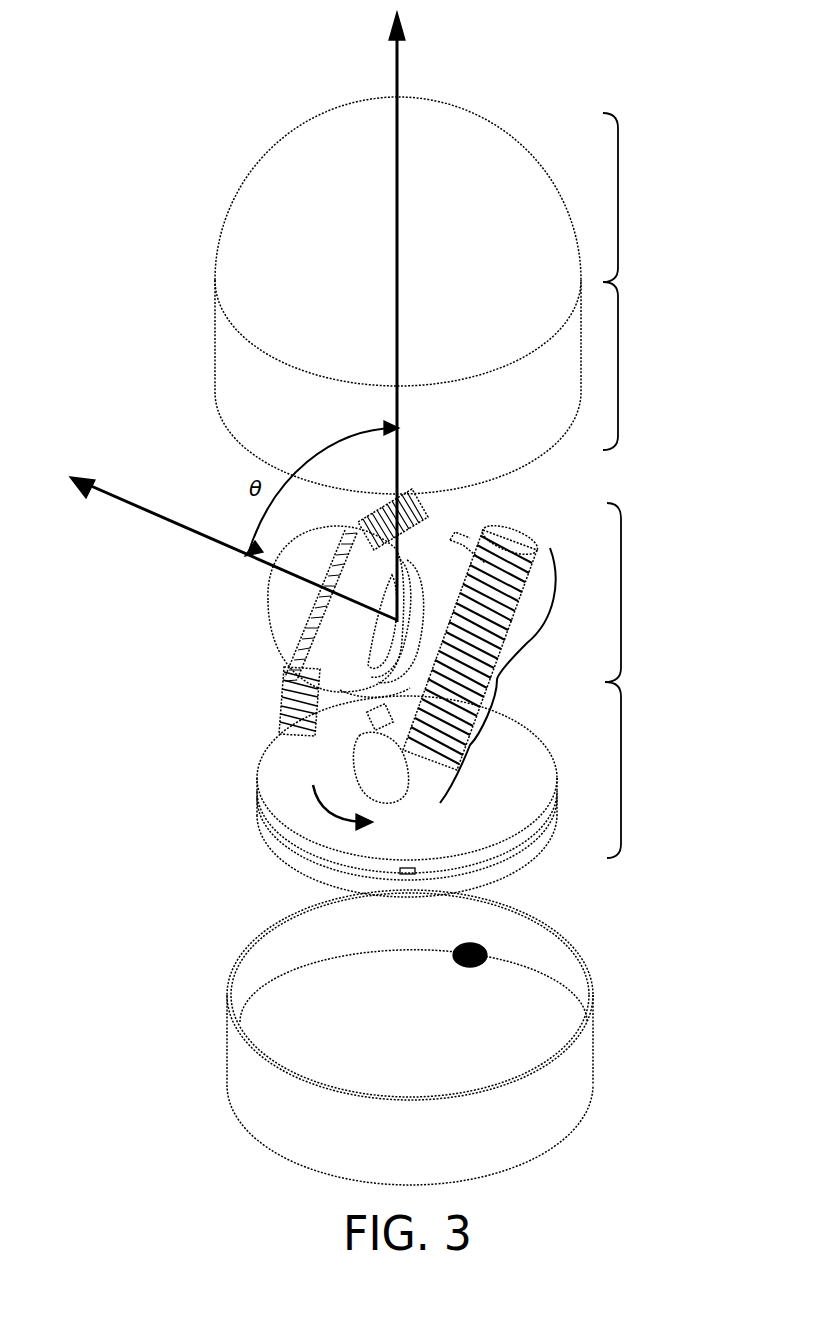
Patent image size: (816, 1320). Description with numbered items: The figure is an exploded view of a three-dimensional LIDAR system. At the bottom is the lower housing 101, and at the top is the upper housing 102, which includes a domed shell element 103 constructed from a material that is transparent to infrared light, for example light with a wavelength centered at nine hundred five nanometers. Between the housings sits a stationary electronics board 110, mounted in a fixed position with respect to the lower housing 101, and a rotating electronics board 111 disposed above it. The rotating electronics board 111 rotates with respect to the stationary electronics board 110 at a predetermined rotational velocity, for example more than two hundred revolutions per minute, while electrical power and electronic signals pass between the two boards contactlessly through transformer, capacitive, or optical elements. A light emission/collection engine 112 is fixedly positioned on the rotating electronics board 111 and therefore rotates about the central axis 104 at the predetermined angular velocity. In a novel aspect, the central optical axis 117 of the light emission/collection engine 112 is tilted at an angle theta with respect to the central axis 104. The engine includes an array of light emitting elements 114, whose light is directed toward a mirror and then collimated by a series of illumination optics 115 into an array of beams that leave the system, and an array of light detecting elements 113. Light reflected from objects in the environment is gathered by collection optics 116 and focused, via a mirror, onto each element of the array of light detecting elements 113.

The lower housing 101 is at (593, 1048).
The upper housing 102 is at (464, 295).
The domed shell element 103 is at (311, 225).
The central axis 104 is at (397, 68).
The stationary electronics board 110 is at (255, 823).
The rotating electronics board 111 is at (255, 768).
The light emission/collection engine 112 is at (607, 682).
The array of light detecting elements 113 is at (495, 680).
The array of light emitting elements 114 is at (287, 697).
The illumination optics 115 is at (278, 615).
The collection optics 116 is at (362, 640).
The central optical axis 117 is at (139, 509).